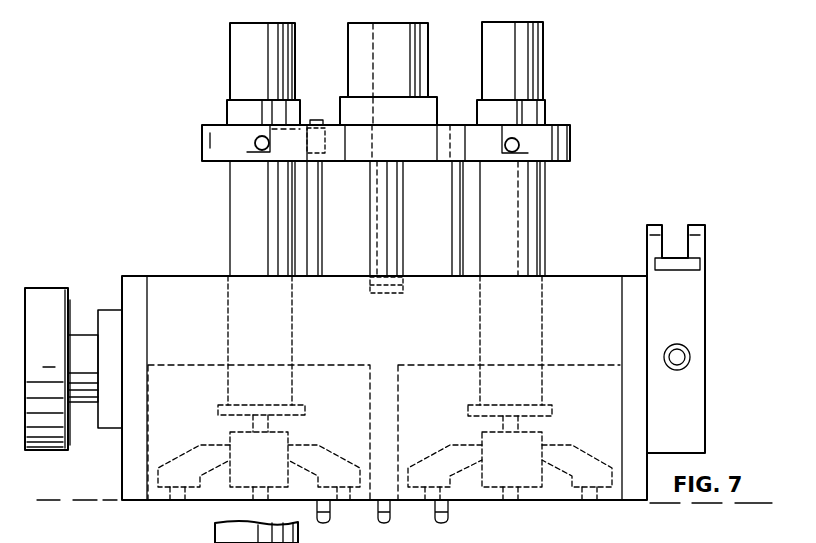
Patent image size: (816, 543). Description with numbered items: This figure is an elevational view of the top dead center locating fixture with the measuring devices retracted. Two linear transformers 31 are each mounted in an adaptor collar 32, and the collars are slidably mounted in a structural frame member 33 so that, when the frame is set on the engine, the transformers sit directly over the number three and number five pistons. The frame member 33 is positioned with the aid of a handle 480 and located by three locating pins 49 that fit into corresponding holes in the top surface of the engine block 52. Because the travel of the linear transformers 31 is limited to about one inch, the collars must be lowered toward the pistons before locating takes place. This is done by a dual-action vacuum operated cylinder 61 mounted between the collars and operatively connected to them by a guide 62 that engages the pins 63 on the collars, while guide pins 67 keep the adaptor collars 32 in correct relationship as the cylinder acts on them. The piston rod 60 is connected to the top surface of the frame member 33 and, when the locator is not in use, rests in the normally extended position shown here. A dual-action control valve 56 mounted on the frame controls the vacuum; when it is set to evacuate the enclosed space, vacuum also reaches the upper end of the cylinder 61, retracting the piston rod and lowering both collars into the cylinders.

The linear transformer 31 is at (240, 52).
The adaptor collar 32 is at (202, 147).
The structural frame member 33 is at (188, 274).
The locating pin 49 is at (331, 507).
The handle 480 is at (45, 288).
The engine block 52 is at (105, 470).
The dual-action control valve 56 is at (705, 318).
The piston rod 60 is at (375, 248).
The dual-action vacuum operated cylinder 61 is at (422, 53).
The guide 62 is at (298, 132).
The pin 63 is at (253, 142).
The guide pin 67 is at (323, 213).